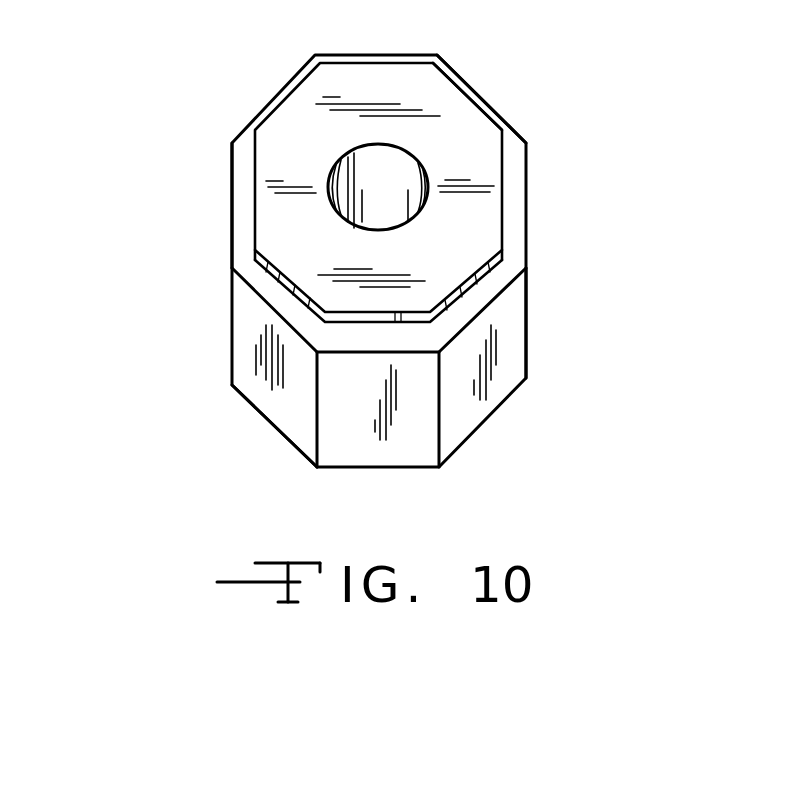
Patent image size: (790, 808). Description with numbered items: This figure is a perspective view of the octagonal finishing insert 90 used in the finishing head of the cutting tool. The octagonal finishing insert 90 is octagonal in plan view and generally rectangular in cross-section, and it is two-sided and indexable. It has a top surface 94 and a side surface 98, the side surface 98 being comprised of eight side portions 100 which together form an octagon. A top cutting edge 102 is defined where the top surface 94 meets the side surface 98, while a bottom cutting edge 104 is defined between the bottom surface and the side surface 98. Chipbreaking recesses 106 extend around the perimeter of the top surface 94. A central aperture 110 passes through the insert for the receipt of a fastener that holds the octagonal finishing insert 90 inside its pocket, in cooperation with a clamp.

The octagonal finishing insert 90 is at (182, 160).
The top surface 94 is at (458, 137).
The side surface 98 is at (528, 300).
The side portions 100 is at (285, 415).
The top cutting edge 102 is at (230, 222).
The bottom cutting edge 104 is at (243, 395).
The chipbreaking recesses 106 is at (517, 183).
The central aperture 110 is at (388, 173).